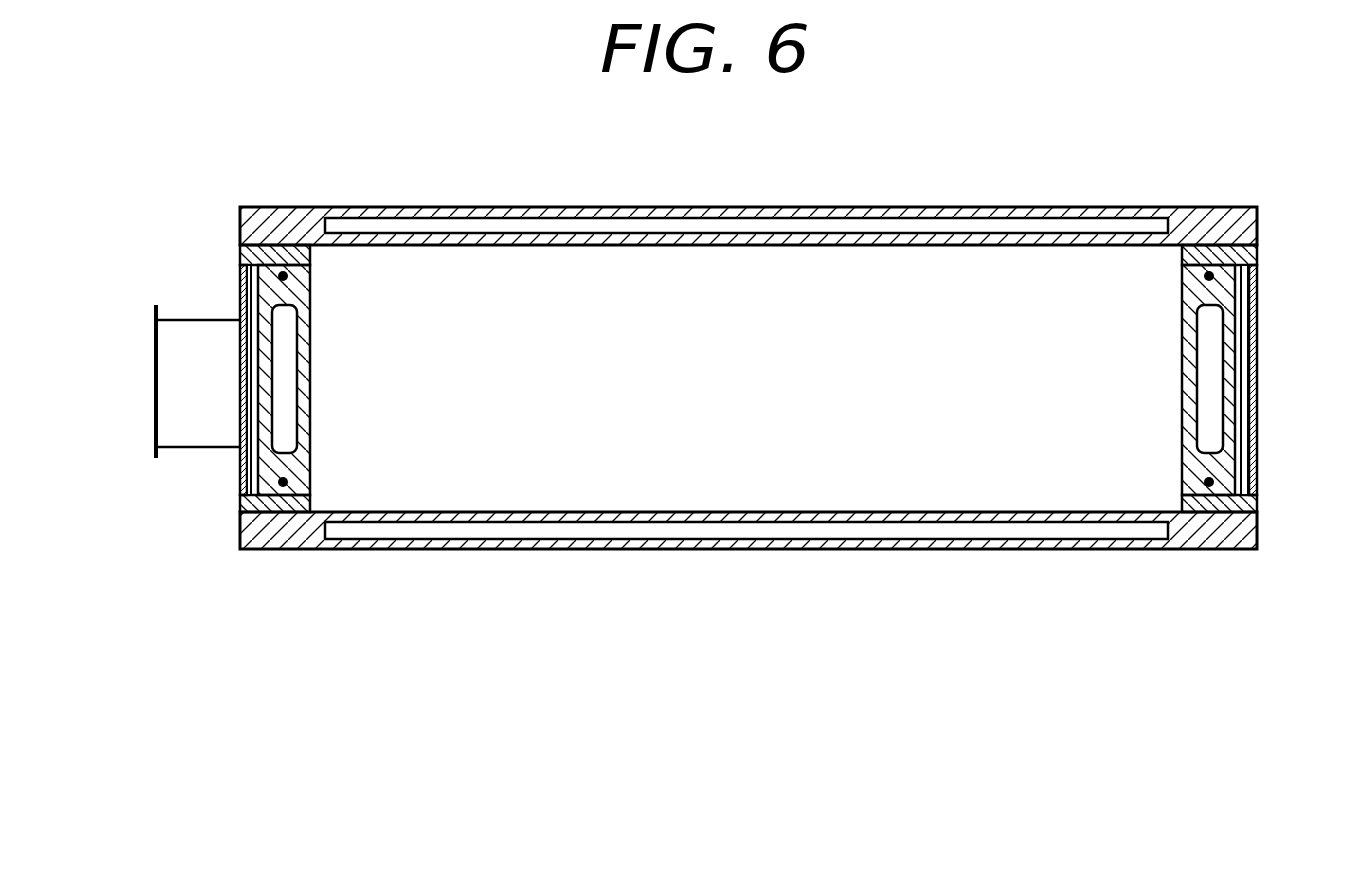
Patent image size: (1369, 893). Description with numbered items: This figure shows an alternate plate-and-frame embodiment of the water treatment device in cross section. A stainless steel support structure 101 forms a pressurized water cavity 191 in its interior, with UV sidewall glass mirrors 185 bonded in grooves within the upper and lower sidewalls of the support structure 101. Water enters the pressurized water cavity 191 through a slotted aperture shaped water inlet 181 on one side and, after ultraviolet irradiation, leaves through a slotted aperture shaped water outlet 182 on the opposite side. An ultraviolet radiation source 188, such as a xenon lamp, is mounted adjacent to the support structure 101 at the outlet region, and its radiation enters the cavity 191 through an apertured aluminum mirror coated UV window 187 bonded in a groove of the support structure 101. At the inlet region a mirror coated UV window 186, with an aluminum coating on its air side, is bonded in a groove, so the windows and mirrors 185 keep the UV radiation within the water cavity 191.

The stainless steel support structure 101 is at (1202, 222).
The UV sidewall glass mirrors 185 is at (445, 226).
The apertured aluminum mirror coated UV window 187 is at (249, 283).
The mirror coated UV window 186 is at (1243, 338).
The slotted aperture shaped water outlet 182 is at (284, 444).
The slotted aperture shaped water inlet 181 is at (1207, 430).
The ultraviolet radiation source 188 is at (176, 358).
The pressurized water cavity 191 is at (546, 374).